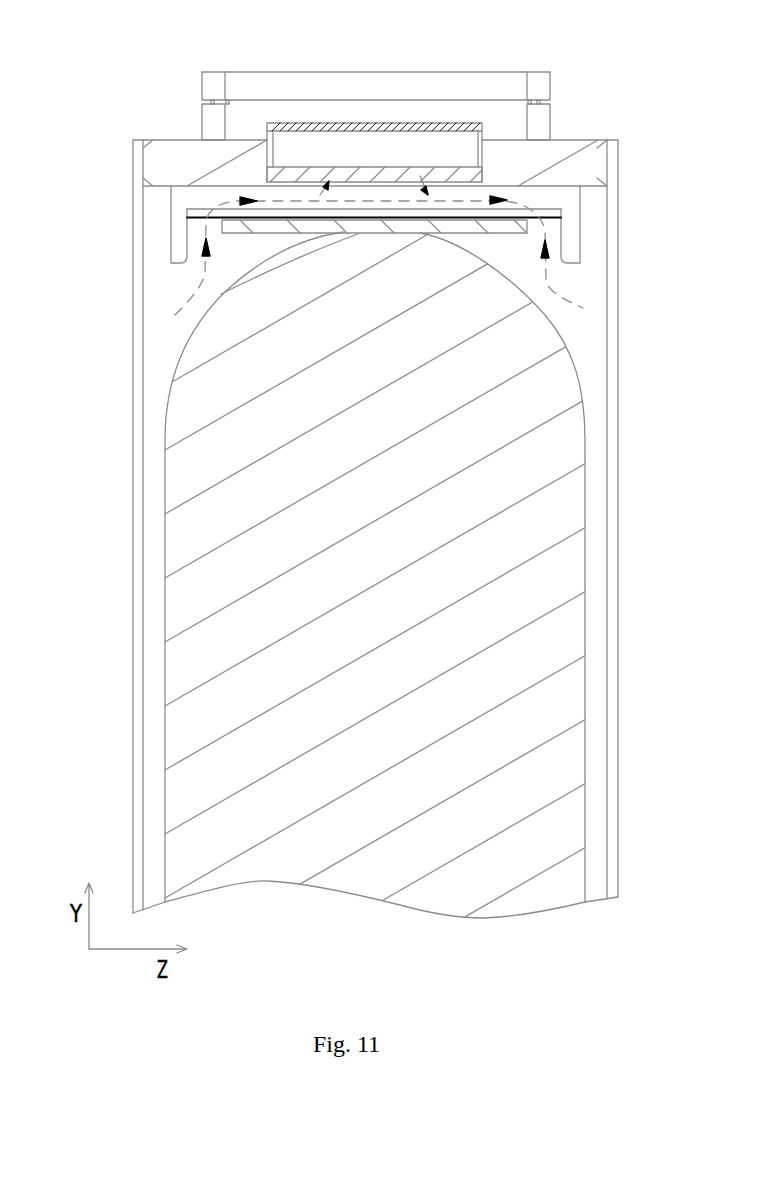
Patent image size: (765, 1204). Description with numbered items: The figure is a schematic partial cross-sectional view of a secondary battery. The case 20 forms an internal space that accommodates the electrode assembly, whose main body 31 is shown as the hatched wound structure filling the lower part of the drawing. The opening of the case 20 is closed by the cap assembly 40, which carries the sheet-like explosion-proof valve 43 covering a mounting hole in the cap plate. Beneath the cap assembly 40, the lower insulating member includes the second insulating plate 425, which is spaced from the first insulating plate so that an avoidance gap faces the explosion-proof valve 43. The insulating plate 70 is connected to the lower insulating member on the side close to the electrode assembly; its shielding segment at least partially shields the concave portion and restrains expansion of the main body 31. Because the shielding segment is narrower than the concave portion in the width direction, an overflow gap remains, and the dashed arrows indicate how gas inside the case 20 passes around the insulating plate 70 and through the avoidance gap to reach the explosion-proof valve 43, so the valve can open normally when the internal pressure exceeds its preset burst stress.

The case 20 is at (137, 290).
The main body 31 is at (235, 453).
The cap assembly 40 is at (177, 150).
The explosion-proof valve 43 is at (378, 172).
The second insulating plate 425 is at (183, 202).
The insulating plate 70 is at (487, 226).